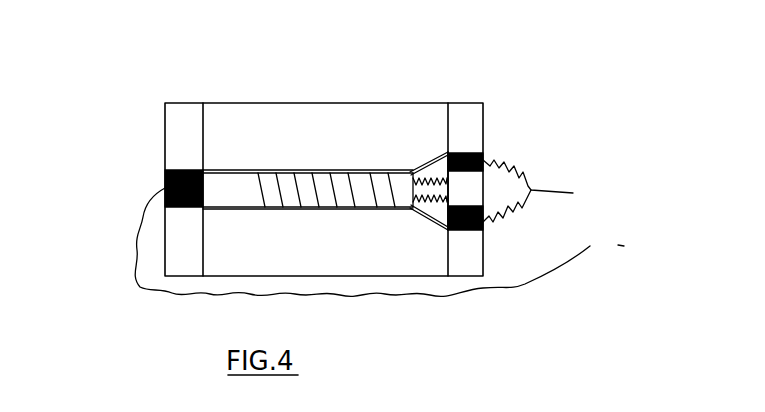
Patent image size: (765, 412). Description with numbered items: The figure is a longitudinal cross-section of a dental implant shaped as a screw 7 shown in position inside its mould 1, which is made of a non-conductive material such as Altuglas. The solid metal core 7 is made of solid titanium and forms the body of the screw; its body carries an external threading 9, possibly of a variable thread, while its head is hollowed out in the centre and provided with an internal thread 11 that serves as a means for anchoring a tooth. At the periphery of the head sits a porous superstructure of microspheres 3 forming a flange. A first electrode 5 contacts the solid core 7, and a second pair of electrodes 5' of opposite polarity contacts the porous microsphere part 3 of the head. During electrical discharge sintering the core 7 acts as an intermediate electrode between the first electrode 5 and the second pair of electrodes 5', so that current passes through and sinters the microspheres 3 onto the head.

The mould 1 is at (483, 127).
The microspheres 3 is at (447, 215).
The first electrode 5 is at (123, 171).
The second pair of electrodes 5' is at (550, 203).
The solid metal core 7 is at (250, 183).
The external threading 9 is at (360, 188).
The internal thread 11 is at (414, 177).